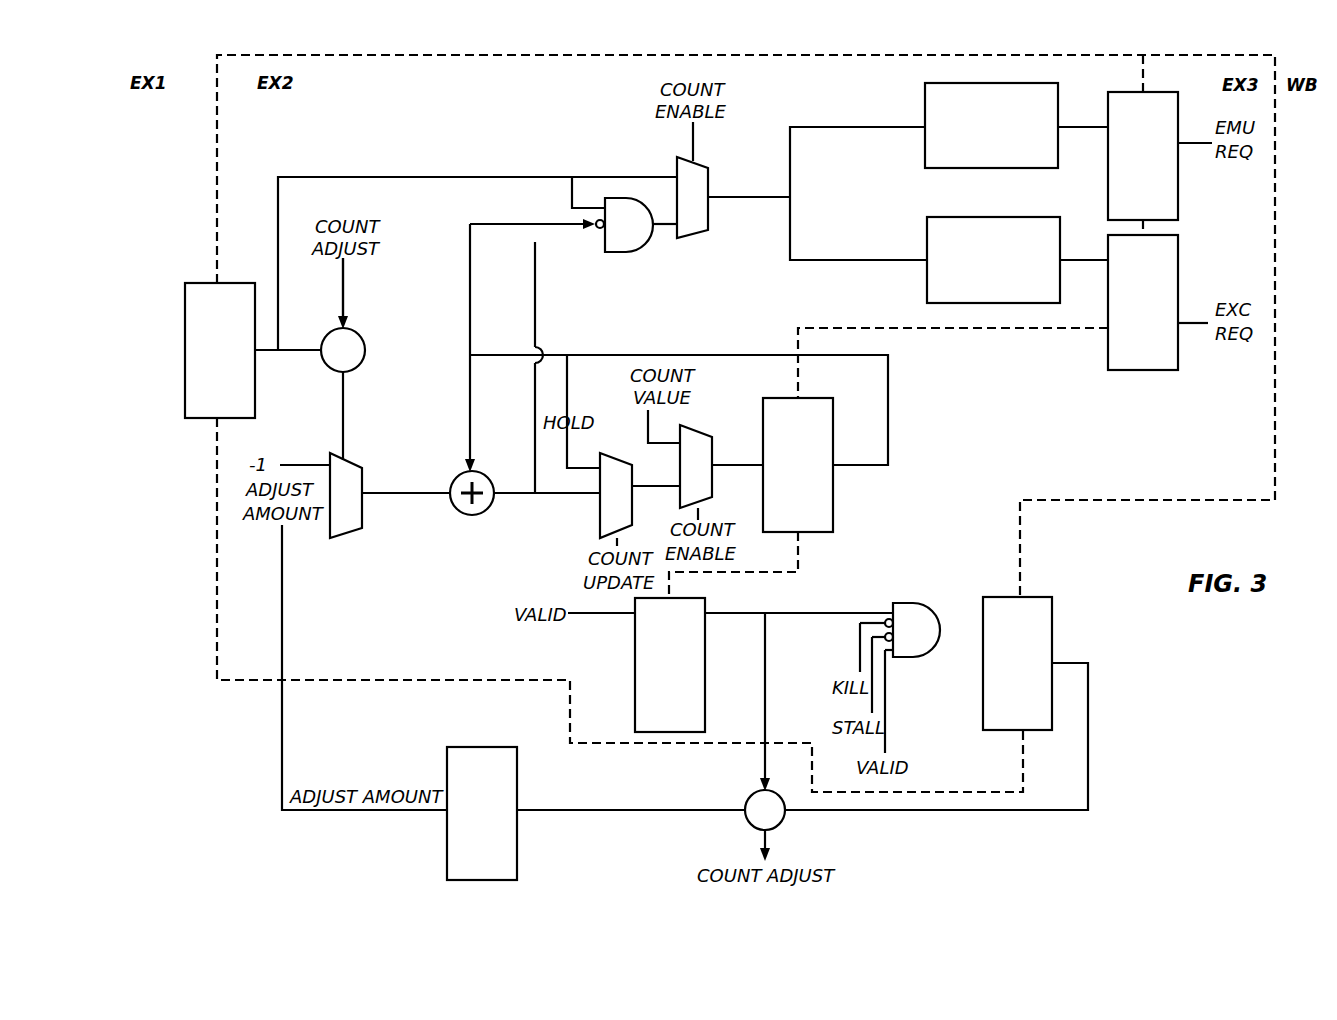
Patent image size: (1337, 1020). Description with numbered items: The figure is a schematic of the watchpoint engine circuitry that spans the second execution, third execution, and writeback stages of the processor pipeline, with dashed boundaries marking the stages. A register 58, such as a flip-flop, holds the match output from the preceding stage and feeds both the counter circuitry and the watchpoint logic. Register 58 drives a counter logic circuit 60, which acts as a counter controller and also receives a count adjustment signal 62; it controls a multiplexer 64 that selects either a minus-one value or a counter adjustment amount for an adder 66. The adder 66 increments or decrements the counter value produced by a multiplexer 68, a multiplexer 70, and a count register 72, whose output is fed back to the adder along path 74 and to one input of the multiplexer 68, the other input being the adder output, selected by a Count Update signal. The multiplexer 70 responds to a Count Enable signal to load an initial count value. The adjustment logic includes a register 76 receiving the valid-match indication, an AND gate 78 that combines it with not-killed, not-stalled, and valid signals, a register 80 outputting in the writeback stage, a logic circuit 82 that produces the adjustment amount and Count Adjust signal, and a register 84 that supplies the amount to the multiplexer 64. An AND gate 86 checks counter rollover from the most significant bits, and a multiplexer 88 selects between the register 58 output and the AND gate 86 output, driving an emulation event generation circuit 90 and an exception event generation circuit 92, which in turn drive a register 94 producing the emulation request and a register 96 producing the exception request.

The register 58 is at (255, 388).
The counter logic circuit 60 is at (360, 334).
The count adjustment signal 62 is at (343, 293).
The multiplexer 64 is at (350, 458).
The adder 66 is at (482, 513).
The multiplexer 68 is at (600, 529).
The multiplexer 70 is at (698, 428).
The count register 72 is at (818, 532).
The feedback of count register output 74 is at (858, 467).
The register 76 is at (705, 672).
The AND gate 78 is at (908, 603).
The register 80 is at (1028, 597).
The logic circuit 82 is at (748, 826).
The register 84 is at (512, 747).
The AND gate 86 is at (620, 252).
The multiplexer 88 is at (700, 232).
The emulation event generation circuit 90 is at (1030, 83).
The exception event generation circuit 92 is at (1030, 217).
The register 94 is at (1178, 196).
The register 96 is at (1178, 273).